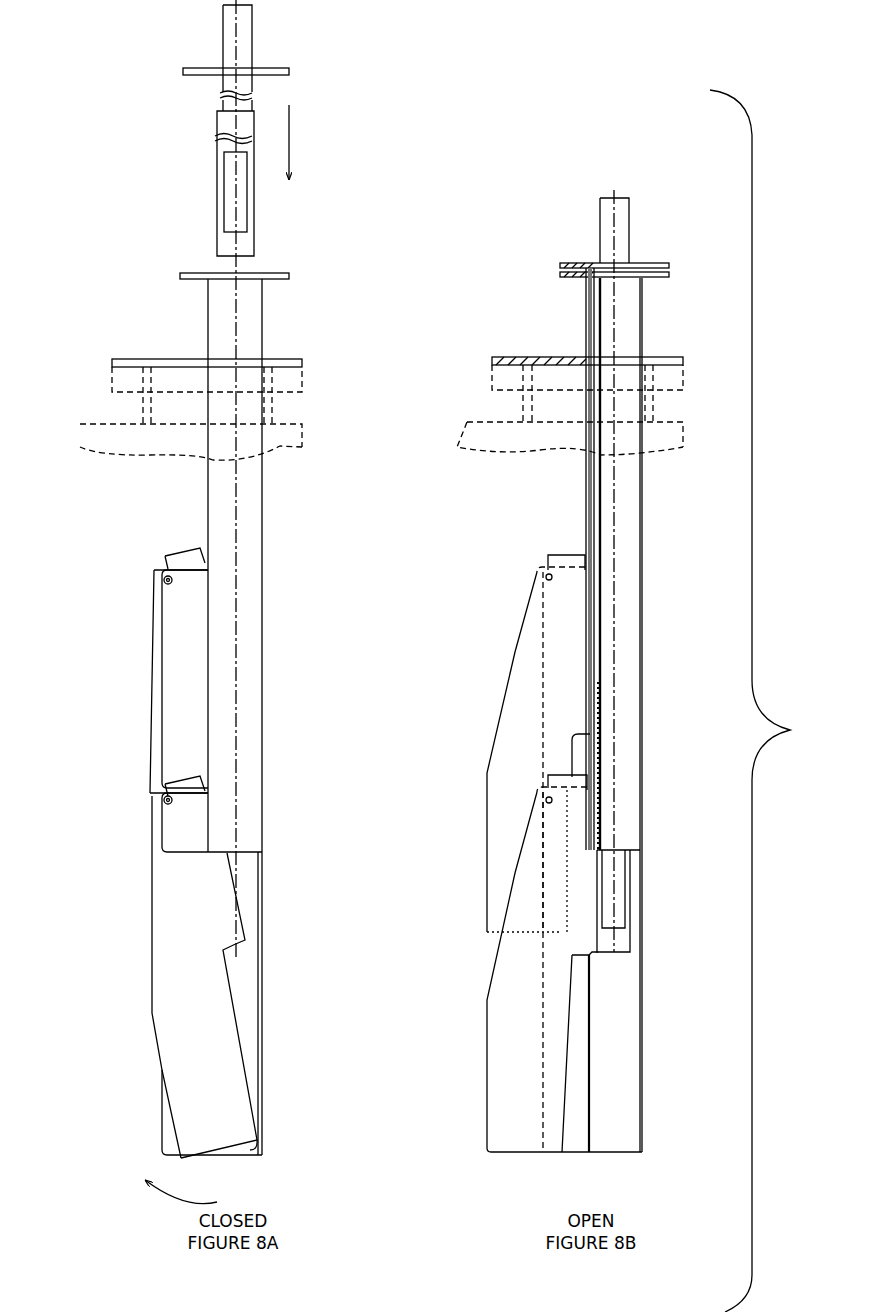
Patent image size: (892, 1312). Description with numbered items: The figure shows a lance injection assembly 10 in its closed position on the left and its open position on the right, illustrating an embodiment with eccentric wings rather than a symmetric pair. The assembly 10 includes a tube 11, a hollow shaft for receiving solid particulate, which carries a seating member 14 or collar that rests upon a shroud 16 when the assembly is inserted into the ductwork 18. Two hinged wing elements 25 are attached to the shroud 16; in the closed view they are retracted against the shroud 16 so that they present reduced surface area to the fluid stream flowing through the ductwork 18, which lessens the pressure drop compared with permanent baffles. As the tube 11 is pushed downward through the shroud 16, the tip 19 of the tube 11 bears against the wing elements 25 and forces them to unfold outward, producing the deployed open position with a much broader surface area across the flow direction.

In FIG. 8B, the lance injection assembly 10 is at (769, 701).
In FIG. 8A, the tube 11 is at (223, 40).
In FIG. 8B, the tube 11 is at (614, 524).
In FIG. 8A, the seating member 14 is at (290, 67).
In FIG. 8B, the seating member 14 is at (614, 270).
In FIG. 8A, the shroud 16 is at (263, 317).
In FIG. 8B, the shroud 16 is at (583, 525).
In FIG. 8A, the ductwork 18 is at (302, 377).
In FIG. 8B, the ductwork 18 is at (570, 406).
In FIG. 8A, the tip 19 is at (253, 222).
In FIG. 8A, the pivoting flap 25 is at (152, 652).
In FIG. 8B, the pivoting flap 25 is at (513, 650).